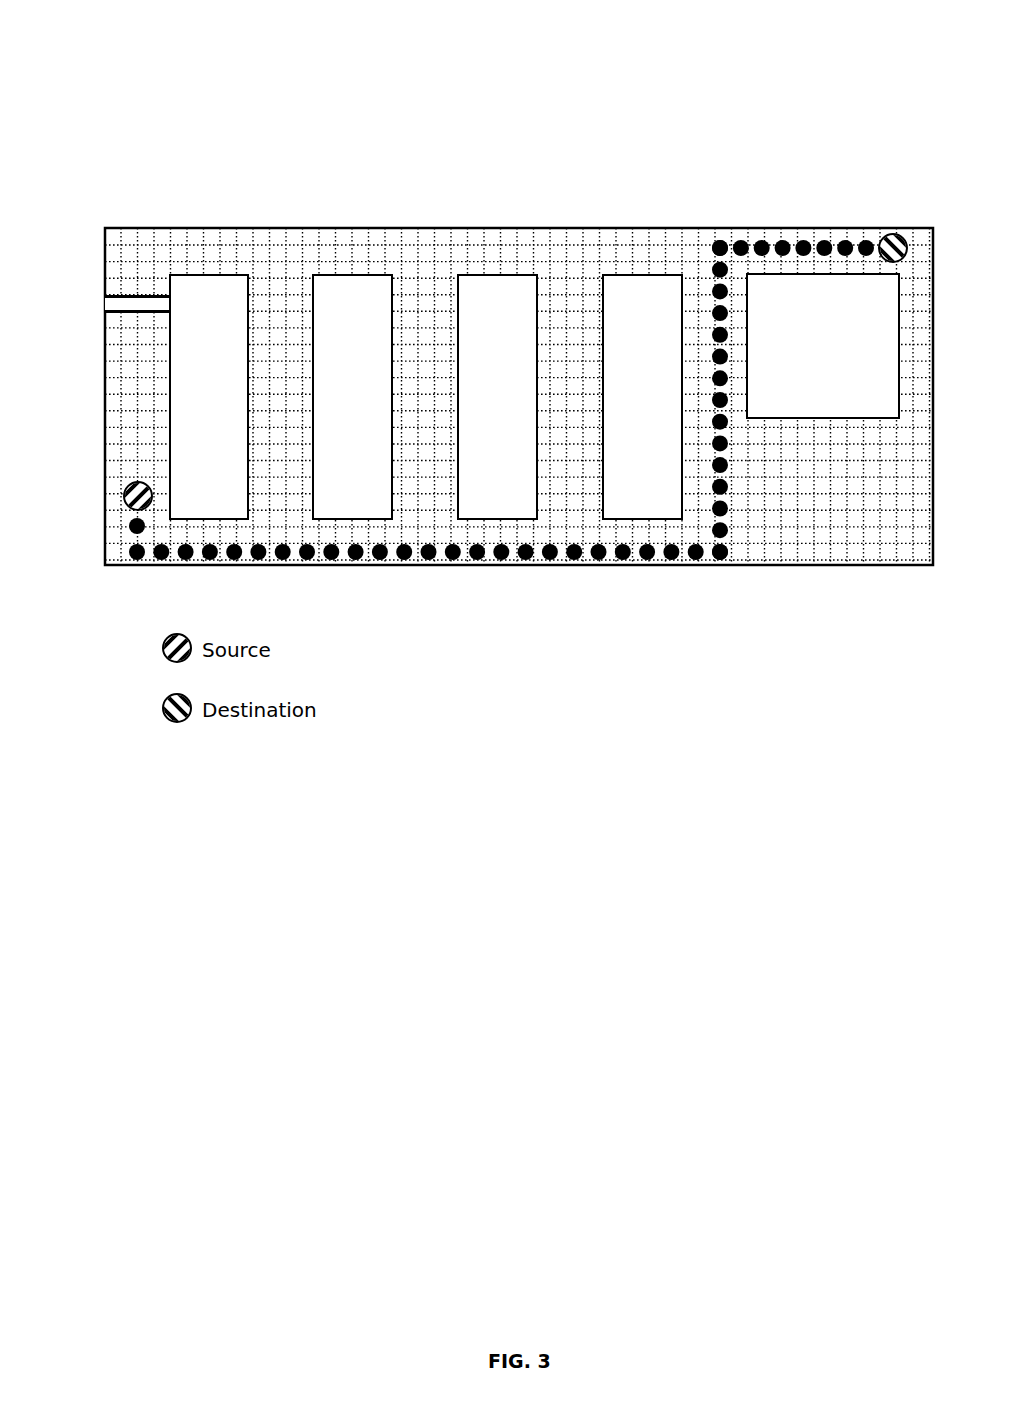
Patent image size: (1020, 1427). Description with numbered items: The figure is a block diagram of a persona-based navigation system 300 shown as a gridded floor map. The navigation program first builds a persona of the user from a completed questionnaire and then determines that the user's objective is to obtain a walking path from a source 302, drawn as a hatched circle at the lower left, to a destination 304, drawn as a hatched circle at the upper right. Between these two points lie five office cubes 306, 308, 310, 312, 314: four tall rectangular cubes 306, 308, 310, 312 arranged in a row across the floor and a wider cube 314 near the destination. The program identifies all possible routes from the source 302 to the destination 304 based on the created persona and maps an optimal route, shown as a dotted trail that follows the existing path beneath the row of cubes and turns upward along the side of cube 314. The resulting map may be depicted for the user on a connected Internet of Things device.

The persona-based navigation system 300 is at (100, 73).
The source 302 is at (108, 482).
The destination 304 is at (882, 228).
The office cube 306 is at (209, 397).
The office cube 308 is at (352, 397).
The office cube 310 is at (497, 397).
The office cube 312 is at (642, 397).
The office cube 314 is at (823, 346).